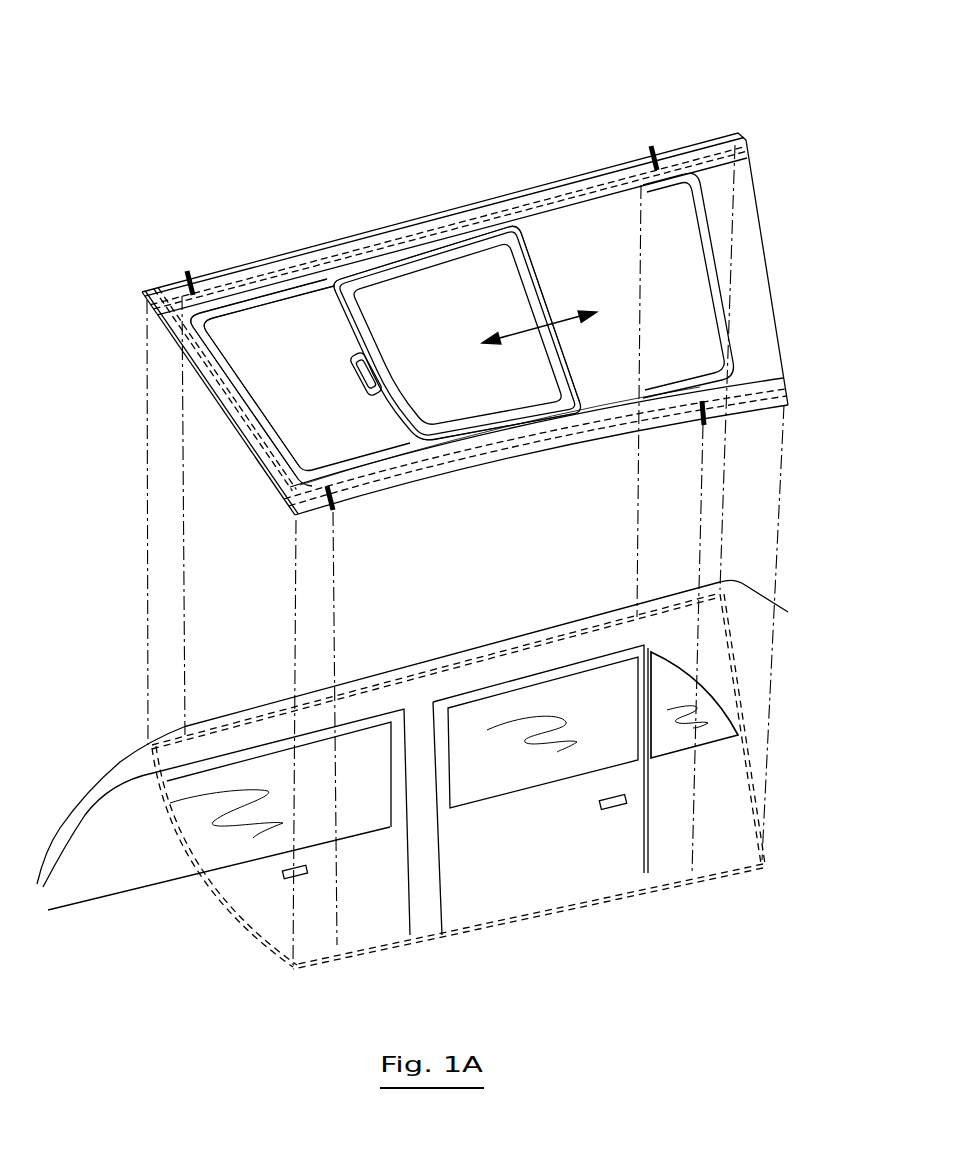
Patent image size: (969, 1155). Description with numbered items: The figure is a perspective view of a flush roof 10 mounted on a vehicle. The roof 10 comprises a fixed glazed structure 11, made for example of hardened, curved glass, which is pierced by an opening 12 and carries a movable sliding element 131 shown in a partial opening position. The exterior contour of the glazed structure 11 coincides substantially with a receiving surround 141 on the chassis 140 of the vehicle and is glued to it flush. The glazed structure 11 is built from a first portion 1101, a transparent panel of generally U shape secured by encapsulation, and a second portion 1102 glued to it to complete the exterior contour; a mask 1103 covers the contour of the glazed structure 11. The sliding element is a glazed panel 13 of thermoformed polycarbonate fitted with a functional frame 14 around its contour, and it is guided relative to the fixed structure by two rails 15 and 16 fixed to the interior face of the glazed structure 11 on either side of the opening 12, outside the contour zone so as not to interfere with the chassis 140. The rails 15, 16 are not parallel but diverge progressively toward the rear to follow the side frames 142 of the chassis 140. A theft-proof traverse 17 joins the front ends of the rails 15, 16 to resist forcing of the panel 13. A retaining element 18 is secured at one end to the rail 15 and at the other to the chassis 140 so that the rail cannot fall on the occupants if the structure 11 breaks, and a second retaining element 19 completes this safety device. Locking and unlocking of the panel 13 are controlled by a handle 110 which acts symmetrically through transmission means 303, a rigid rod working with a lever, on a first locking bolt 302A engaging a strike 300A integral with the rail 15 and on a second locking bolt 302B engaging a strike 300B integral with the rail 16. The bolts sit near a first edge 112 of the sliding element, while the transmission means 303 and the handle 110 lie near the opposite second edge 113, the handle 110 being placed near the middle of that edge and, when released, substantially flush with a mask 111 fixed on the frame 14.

The roof 10 is at (203, 187).
The fixed glazed structure 11 is at (356, 242).
The opening 12 is at (212, 413).
The glazed panel 13 is at (474, 406).
The functional frame 14 is at (507, 422).
The rail 15 is at (486, 228).
The rail 16 is at (368, 455).
The theft-proof traverse 17 is at (198, 381).
The retaining element 18 is at (192, 282).
The second retaining element 19 is at (330, 502).
The handle 110 is at (285, 402).
The mask 111 is at (374, 388).
The first edge 112 is at (548, 268).
The second edge 113 is at (322, 305).
The movable sliding element 131 is at (548, 422).
The chassis 140 is at (116, 765).
The receiving surround 141 is at (212, 885).
The side frames 142 is at (510, 627).
The strike 300A is at (339, 267).
The strike 300B is at (447, 437).
The first locking bolt 302A is at (512, 215).
The second locking bolt 302B is at (573, 427).
The transmission means 303 is at (410, 256).
The first portion 1101 is at (182, 328).
The second portion 1102 is at (630, 233).
The mask 1103 is at (215, 418).